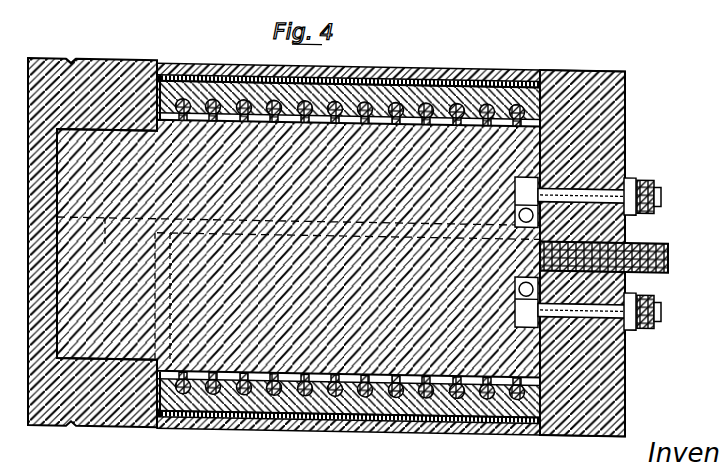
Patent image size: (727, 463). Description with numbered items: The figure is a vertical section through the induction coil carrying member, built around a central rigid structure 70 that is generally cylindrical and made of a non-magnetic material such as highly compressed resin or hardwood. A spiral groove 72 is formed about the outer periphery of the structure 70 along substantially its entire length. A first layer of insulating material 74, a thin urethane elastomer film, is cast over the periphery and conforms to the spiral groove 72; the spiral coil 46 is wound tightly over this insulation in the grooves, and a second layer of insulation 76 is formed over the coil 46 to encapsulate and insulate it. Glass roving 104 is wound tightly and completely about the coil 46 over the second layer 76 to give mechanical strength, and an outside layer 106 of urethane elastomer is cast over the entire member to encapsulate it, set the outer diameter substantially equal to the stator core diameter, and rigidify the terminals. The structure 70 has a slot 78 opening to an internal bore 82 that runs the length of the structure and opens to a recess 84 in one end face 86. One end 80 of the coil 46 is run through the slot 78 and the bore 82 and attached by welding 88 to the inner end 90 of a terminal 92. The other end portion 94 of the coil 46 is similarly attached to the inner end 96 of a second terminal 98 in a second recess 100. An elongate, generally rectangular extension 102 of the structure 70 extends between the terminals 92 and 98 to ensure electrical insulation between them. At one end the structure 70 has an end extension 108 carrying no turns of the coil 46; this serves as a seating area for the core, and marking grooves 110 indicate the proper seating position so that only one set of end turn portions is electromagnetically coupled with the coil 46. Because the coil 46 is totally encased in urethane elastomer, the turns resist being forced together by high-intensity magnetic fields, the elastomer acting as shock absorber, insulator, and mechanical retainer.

The spiral coil 46 is at (241, 68).
The central rigid structure 70 is at (545, 124).
The spiral groove 72 is at (171, 77).
The first layer of insulating material 74 is at (203, 71).
The second layer of insulation 76 is at (433, 72).
The slot 78 is at (105, 240).
The end of the coil 80 is at (148, 326).
The internal bore 82 is at (343, 216).
The recess 84 is at (531, 164).
The end face 86 is at (541, 134).
The welding 88 is at (540, 198).
The inner end of terminal 90 is at (524, 184).
The terminal 92 is at (661, 186).
The other end portion of the coil 94 is at (522, 314).
The inner end of second terminal 96 is at (535, 309).
The second terminal 98 is at (661, 302).
The second recess 100 is at (627, 275).
The rectangular extension 102 is at (671, 239).
The glass roving 104 is at (479, 62).
The outside layer of urethane elastomer 106 is at (513, 69).
The end extension 108 is at (103, 128).
The marking grooves 110 is at (75, 56).